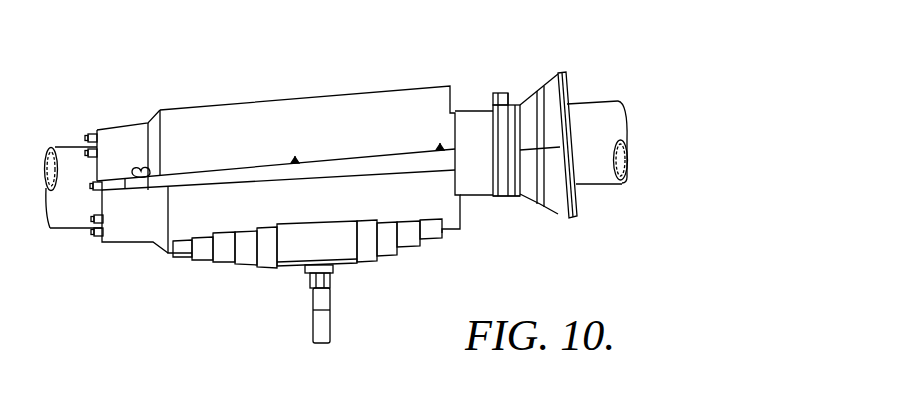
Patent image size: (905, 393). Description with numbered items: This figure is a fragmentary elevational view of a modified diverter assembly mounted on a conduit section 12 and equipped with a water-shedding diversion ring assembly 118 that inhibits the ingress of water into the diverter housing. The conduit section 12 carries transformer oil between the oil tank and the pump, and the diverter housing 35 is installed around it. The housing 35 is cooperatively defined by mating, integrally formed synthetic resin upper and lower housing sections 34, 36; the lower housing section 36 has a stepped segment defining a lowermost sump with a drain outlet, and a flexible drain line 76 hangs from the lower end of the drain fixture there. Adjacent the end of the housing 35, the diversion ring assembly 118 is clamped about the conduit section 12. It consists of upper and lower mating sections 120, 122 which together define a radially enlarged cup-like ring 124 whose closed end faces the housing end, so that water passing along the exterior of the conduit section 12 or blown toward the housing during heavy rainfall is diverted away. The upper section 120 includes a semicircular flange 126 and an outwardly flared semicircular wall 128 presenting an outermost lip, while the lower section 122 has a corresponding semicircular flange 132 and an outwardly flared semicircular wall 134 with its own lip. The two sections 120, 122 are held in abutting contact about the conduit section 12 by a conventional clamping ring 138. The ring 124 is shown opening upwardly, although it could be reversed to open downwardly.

The conduit section 12 is at (645, 188).
The upper housing section 34 is at (336, 81).
The housing 35 is at (212, 83).
The lower housing section 36 is at (219, 275).
The flexible drain line 76 is at (328, 328).
The diversion ring assembly 118 is at (587, 78).
The upper section 120 is at (534, 64).
The lower section 122 is at (543, 235).
The cup-like ring 124 is at (574, 130).
The semicircular flange 126 is at (489, 122).
The outwardly flared semicircular wall 128 is at (551, 74).
The semicircular flange 132 is at (495, 174).
The outwardly flared semicircular wall 134 is at (562, 210).
The clamping ring 138 is at (507, 194).